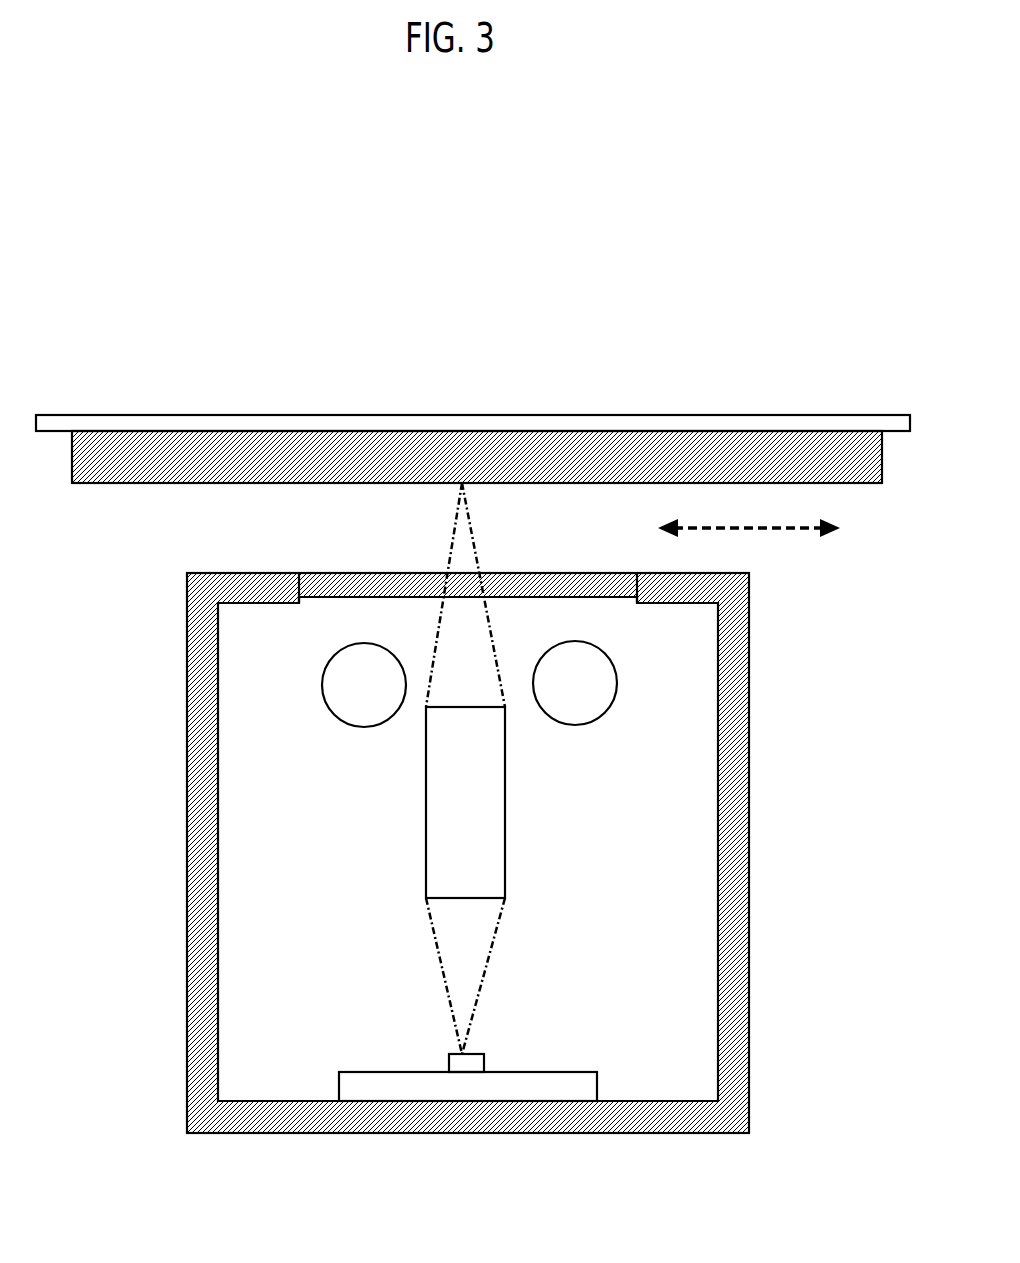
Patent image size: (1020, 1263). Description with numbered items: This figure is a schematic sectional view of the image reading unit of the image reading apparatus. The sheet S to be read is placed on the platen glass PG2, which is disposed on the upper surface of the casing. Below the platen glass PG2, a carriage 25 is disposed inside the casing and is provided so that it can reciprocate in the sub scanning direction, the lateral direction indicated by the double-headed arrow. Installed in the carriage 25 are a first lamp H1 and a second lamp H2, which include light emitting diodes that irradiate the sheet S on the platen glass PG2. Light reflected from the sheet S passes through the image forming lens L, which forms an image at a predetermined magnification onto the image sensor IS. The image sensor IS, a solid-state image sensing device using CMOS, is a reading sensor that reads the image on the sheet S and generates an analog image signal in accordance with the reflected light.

The sheet S is at (142, 426).
The platen glass PG2 is at (178, 466).
The carriage 25 is at (762, 728).
The image forming lens L is at (455, 795).
The first lamp H1 is at (356, 698).
The second lamp H2 is at (578, 694).
The image sensor IS is at (472, 1067).